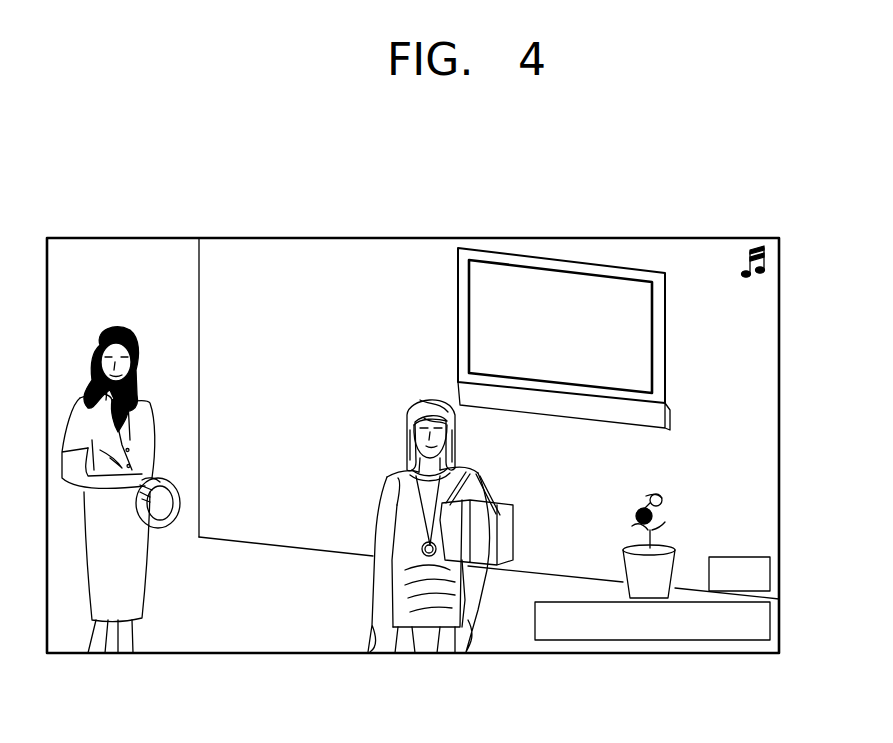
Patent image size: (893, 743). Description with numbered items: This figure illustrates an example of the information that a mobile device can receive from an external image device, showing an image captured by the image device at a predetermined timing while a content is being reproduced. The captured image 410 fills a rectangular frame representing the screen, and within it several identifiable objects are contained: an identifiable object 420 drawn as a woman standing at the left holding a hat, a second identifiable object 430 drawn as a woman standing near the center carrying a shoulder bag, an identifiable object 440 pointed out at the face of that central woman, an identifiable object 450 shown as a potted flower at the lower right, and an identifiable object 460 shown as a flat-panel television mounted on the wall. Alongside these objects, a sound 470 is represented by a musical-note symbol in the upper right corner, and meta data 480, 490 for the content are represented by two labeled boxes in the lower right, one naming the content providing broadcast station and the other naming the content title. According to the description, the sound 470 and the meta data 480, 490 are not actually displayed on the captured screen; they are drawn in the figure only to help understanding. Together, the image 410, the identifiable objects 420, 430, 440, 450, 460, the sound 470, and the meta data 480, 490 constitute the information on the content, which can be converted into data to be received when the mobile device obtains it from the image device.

The image captured at a predetermined timing 410 is at (288, 238).
The identifiable object 420 is at (147, 583).
The identifiable object 430 is at (448, 448).
The identifiable object 440 is at (405, 420).
The identifiable object 450 is at (662, 497).
The identifiable object 460 is at (550, 383).
The sound 470 is at (766, 258).
The meta data 480 is at (770, 570).
The meta data 490 is at (770, 620).